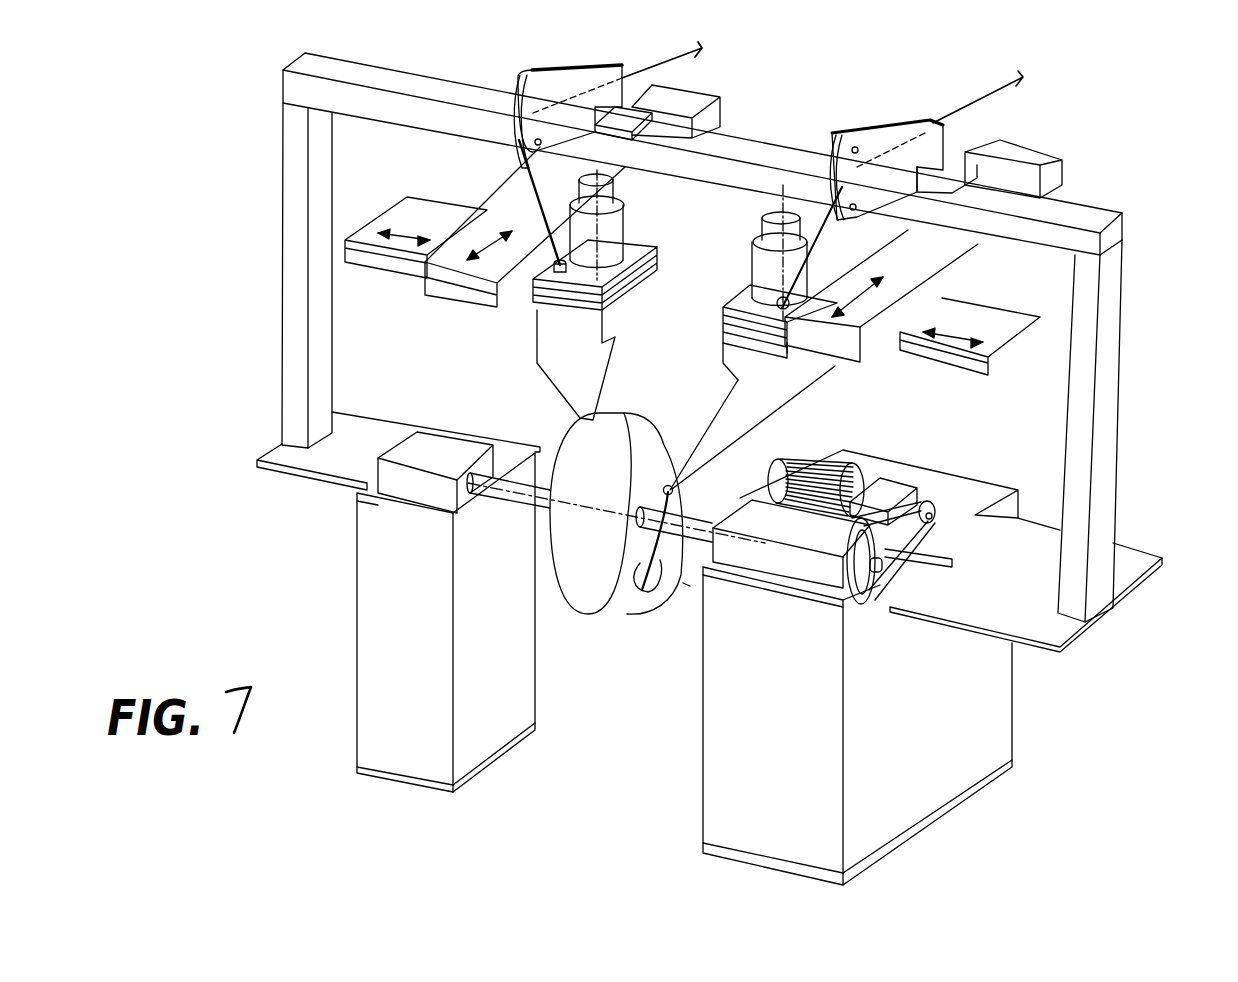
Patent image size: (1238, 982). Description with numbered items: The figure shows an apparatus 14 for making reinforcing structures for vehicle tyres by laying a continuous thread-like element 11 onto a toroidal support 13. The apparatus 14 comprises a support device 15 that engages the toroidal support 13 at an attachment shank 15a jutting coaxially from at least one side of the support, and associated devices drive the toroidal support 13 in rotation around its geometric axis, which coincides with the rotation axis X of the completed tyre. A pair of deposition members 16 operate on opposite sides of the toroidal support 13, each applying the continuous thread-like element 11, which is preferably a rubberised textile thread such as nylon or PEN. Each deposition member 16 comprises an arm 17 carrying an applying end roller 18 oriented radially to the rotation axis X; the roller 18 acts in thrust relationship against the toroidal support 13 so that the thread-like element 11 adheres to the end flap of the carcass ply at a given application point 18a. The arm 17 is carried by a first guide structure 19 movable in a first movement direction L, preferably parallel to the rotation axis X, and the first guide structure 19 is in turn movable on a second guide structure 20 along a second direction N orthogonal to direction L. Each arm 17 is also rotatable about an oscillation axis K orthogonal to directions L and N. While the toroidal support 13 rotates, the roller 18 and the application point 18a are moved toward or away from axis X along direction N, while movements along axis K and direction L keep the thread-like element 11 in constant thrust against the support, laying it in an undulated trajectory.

The continuous thread-like element 11 is at (698, 50).
The toroidal support 13 is at (572, 612).
The apparatus 14 is at (195, 206).
The support device 15 is at (700, 772).
The attachment shank 15a is at (518, 498).
The deposition member 16 is at (512, 325).
The arm 17 is at (553, 357).
The applying end roller 18 is at (705, 455).
The application point 18a is at (663, 478).
The first guide structure 19 is at (407, 210).
The second guide structure 20 is at (727, 120).
The oscillation axis K is at (600, 228).
The first movement direction L is at (410, 243).
The second direction N is at (482, 233).
The rotation axis X is at (687, 583).